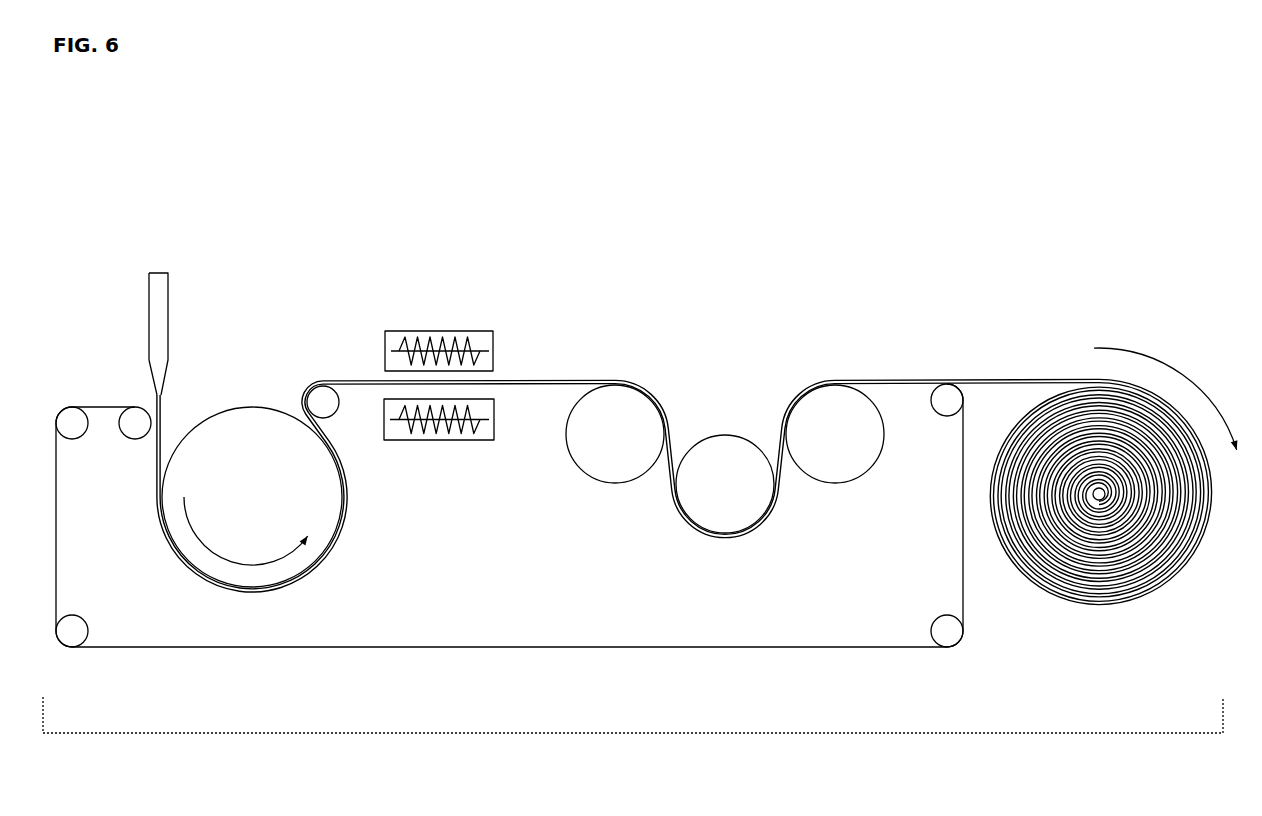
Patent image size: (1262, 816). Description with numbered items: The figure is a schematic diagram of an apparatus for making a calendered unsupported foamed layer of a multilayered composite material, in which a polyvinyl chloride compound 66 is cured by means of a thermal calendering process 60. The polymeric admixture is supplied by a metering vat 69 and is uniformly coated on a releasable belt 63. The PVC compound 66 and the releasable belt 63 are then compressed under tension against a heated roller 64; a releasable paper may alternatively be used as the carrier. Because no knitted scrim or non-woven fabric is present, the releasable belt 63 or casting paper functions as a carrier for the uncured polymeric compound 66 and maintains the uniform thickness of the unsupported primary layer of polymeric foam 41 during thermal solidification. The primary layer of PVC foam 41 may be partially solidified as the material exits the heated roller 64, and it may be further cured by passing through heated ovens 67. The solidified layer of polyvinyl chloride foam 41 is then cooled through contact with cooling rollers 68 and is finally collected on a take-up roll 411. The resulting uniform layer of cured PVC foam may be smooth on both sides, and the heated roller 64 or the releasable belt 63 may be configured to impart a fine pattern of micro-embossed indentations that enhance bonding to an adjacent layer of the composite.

The thermal calendering process 60 is at (633, 733).
The releasable belt 63 is at (53, 557).
The heated roller 64 is at (235, 503).
The polyvinyl chloride compound 66 is at (164, 426).
The heated ovens 67 is at (437, 333).
The cooling rollers 68 is at (602, 445).
The metering vat 69 is at (168, 350).
The unsupported primary layer of polymeric foam 41 is at (592, 382).
The take-up roll 411 is at (1057, 593).